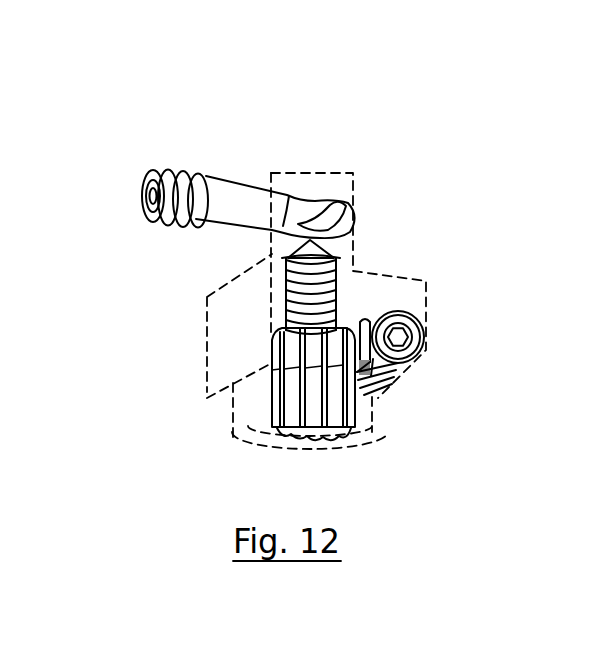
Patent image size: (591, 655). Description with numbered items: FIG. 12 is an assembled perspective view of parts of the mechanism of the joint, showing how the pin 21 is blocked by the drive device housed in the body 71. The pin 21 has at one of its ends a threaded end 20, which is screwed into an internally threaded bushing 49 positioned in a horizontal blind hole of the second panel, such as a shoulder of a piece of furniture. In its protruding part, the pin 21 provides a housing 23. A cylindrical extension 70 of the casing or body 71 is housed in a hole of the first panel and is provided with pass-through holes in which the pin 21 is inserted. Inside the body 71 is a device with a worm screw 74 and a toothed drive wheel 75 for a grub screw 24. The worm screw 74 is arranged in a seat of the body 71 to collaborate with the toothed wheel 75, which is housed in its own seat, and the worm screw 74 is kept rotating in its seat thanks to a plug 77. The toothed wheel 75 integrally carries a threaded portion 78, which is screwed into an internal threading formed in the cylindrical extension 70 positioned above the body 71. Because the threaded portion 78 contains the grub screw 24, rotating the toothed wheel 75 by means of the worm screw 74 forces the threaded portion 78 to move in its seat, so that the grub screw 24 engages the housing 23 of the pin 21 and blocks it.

The threaded end 20 is at (143, 197).
The pin 21 is at (237, 182).
The housing 23 is at (313, 201).
The grub screw 24 is at (305, 243).
The internally threaded bushing 49 is at (175, 170).
The cylindrical extension 70 is at (349, 173).
The body 71 is at (205, 358).
The worm screw 74 is at (368, 372).
The toothed wheel 75 is at (273, 402).
The plug 77 is at (365, 317).
The threaded portion 78 is at (286, 276).